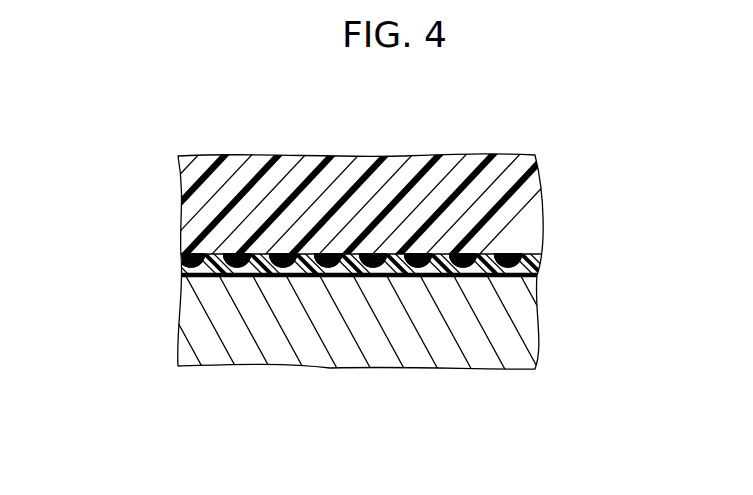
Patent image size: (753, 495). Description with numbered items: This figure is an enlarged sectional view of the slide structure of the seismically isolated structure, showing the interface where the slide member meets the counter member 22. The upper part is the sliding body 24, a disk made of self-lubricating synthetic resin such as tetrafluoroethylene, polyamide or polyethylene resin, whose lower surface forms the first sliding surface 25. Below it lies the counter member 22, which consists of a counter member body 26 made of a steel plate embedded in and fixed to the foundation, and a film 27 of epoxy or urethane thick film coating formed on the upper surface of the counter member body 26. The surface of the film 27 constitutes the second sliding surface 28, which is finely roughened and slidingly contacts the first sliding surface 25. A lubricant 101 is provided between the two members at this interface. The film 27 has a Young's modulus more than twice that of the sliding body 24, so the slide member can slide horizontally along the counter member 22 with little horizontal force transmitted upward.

The counter member 22 is at (380, 345).
The sliding body 24 is at (523, 200).
The first sliding surface 25 is at (328, 256).
The counter member body 26 is at (502, 350).
The film 27 is at (353, 345).
The second sliding surface 28 is at (259, 256).
The lubricant 101 is at (226, 258).